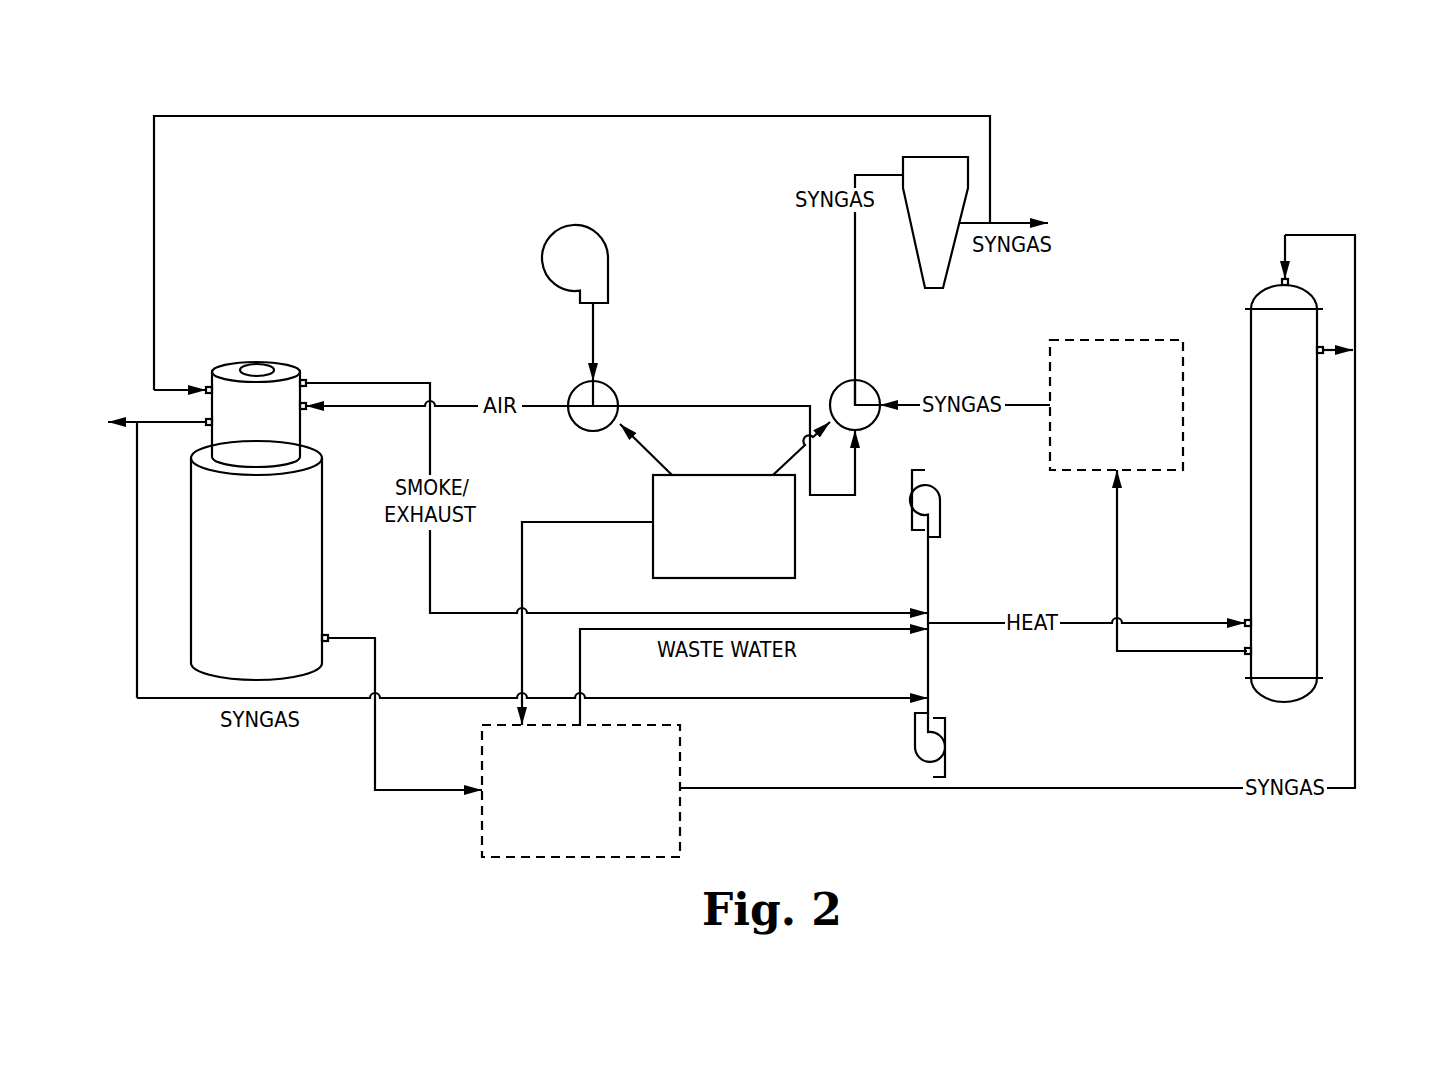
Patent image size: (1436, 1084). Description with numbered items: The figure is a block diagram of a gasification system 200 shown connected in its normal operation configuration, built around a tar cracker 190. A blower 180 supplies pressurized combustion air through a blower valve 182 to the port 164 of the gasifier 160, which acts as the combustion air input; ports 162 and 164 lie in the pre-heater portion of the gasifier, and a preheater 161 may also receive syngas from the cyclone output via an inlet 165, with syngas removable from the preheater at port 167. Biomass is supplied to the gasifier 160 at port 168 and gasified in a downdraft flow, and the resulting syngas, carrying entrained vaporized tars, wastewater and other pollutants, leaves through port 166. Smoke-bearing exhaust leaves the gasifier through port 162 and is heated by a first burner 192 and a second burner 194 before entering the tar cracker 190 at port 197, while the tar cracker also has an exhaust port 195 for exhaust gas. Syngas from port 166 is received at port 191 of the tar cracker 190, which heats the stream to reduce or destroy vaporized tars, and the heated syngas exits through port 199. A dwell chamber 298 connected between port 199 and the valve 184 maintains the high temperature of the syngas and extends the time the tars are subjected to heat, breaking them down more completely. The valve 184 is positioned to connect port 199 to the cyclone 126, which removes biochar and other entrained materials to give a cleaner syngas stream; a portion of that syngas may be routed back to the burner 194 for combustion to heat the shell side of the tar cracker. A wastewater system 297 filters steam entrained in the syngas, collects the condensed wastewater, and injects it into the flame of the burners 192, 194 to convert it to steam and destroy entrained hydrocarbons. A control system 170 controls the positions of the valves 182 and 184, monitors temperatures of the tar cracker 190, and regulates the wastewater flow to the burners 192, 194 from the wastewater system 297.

The gasification system 200 is at (1230, 170).
The cyclone 126 is at (935, 222).
The gasifier 160 is at (256, 560).
The preheater 161 is at (228, 362).
The port 162 is at (306, 379).
The port 164 is at (307, 410).
The inlet 165 is at (207, 386).
The port 166 is at (326, 643).
The port 167 is at (206, 426).
The port 168 is at (262, 364).
The control system 170 is at (724, 526).
The blower 180 is at (575, 264).
The blower valve 182 is at (606, 428).
The valve 184 is at (866, 428).
The tar cracker 190 is at (1284, 493).
The port 191 is at (1290, 282).
The first burner 192 is at (936, 488).
The second burner 194 is at (948, 722).
The exhaust port 195 is at (1323, 348).
The port 197 is at (1246, 620).
The port 199 is at (1246, 656).
The wastewater system 297 is at (581, 791).
The dwell chamber 298 is at (1116, 405).